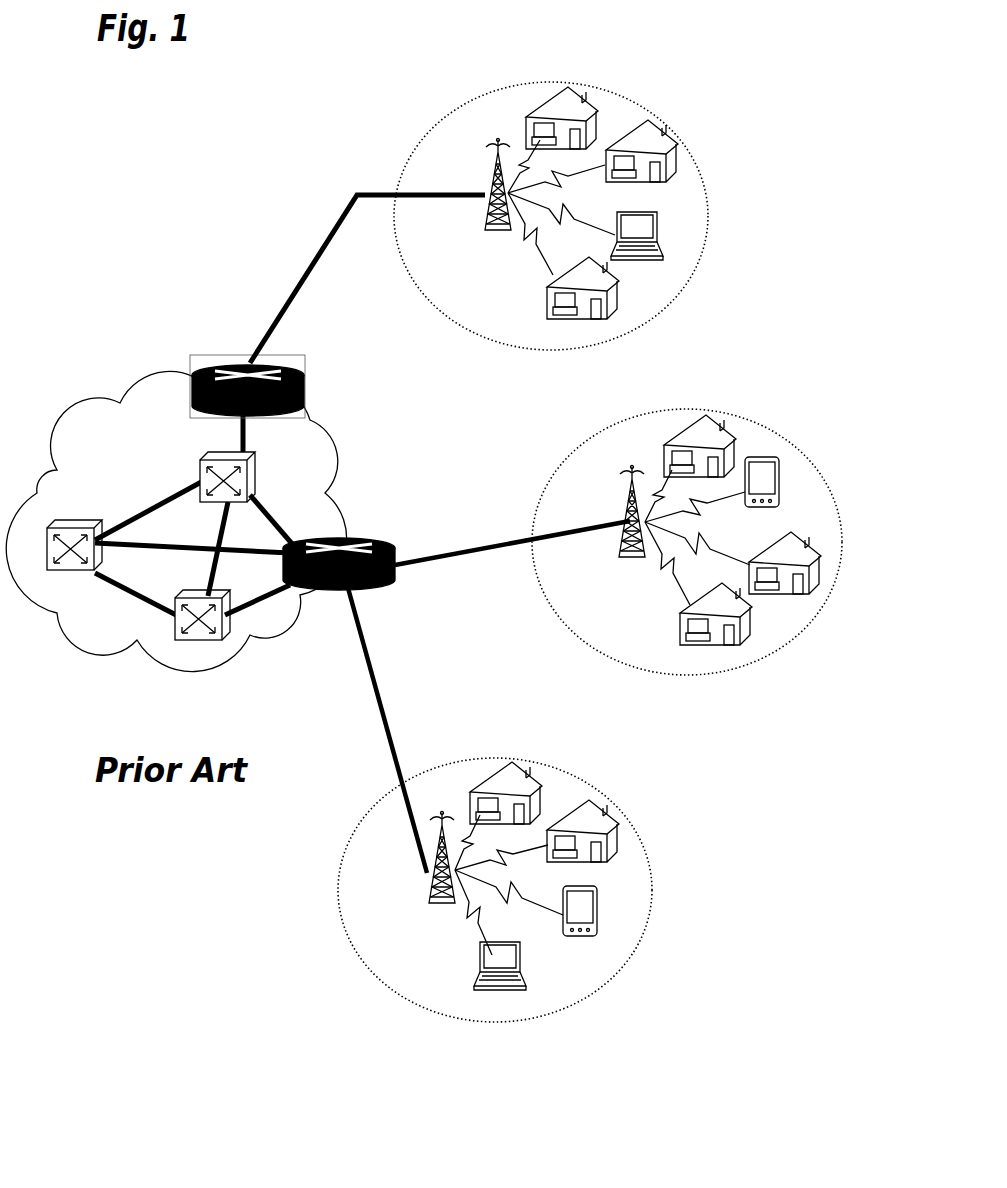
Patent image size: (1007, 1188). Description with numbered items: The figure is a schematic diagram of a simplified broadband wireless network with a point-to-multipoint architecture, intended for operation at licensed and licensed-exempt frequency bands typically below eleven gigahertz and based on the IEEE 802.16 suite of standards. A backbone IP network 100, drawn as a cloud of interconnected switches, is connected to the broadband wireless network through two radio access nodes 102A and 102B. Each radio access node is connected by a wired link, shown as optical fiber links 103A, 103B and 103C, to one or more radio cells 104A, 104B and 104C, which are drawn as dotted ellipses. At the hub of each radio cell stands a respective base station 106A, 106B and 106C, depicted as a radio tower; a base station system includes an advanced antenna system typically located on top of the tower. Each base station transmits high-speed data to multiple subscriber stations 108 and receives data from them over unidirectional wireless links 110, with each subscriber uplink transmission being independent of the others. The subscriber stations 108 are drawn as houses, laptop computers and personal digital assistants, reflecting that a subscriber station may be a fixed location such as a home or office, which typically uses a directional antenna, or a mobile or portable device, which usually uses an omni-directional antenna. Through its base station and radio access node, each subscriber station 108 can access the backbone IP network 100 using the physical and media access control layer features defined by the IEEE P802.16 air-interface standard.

The backbone IP network 100 is at (110, 397).
The radio access node 102A is at (305, 372).
The radio access node 102B is at (393, 540).
The optical fiber link 103A is at (323, 250).
The optical fiber link 103B is at (470, 550).
The optical fiber link 103C is at (378, 672).
The radio cell 104A is at (690, 163).
The radio cell 104B is at (583, 447).
The radio cell 104C is at (643, 867).
The base station 106A is at (495, 190).
The base station 106B is at (627, 517).
The base station 106C is at (430, 887).
The subscriber station 108 is at (645, 133).
The unidirectional wireless link 110 is at (520, 158).